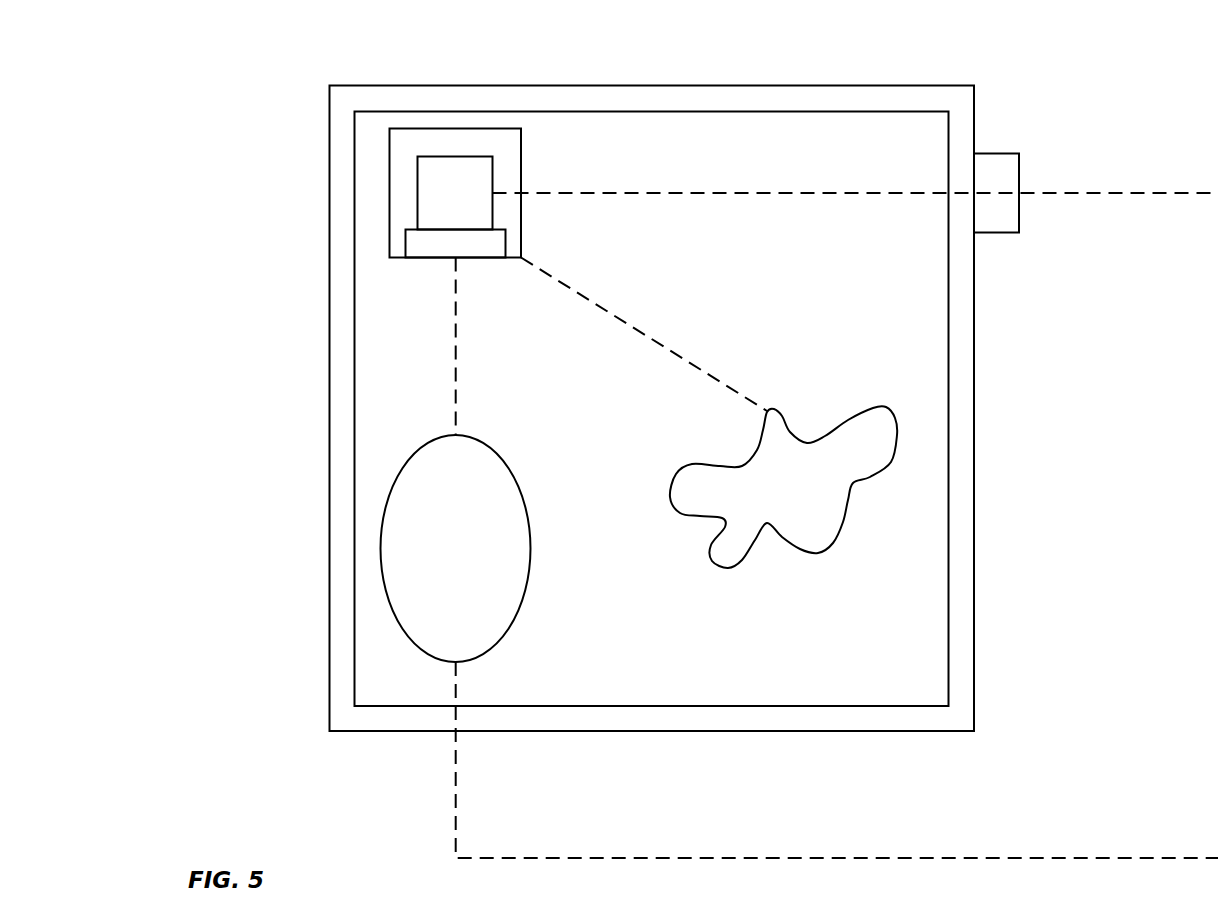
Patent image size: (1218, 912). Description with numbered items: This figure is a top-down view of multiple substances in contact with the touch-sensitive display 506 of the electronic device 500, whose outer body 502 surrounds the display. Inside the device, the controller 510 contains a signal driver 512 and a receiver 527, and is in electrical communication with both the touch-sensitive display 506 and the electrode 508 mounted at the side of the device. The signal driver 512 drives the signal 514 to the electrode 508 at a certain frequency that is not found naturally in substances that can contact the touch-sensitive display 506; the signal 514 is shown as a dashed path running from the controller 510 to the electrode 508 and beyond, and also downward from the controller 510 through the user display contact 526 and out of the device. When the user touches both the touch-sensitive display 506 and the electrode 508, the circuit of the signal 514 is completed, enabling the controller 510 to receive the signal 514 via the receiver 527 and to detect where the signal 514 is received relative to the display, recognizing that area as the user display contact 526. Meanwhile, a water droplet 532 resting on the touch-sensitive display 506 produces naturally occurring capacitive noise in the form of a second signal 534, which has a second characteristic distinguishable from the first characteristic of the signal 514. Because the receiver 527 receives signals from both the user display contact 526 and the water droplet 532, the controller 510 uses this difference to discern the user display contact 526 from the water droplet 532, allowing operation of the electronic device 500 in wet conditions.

The electronic device 500 is at (348, 62).
The housing 502 is at (504, 85).
The touch-sensitive display 506 is at (949, 581).
The electrode 508 is at (1000, 153).
The controller 510 is at (421, 128).
The signal driver 512 is at (417, 191).
The signal 514 is at (693, 193).
The user display contact 526 is at (492, 452).
The receiver 527 is at (428, 258).
The water droplet 532 is at (849, 498).
The second signal 534 is at (665, 346).